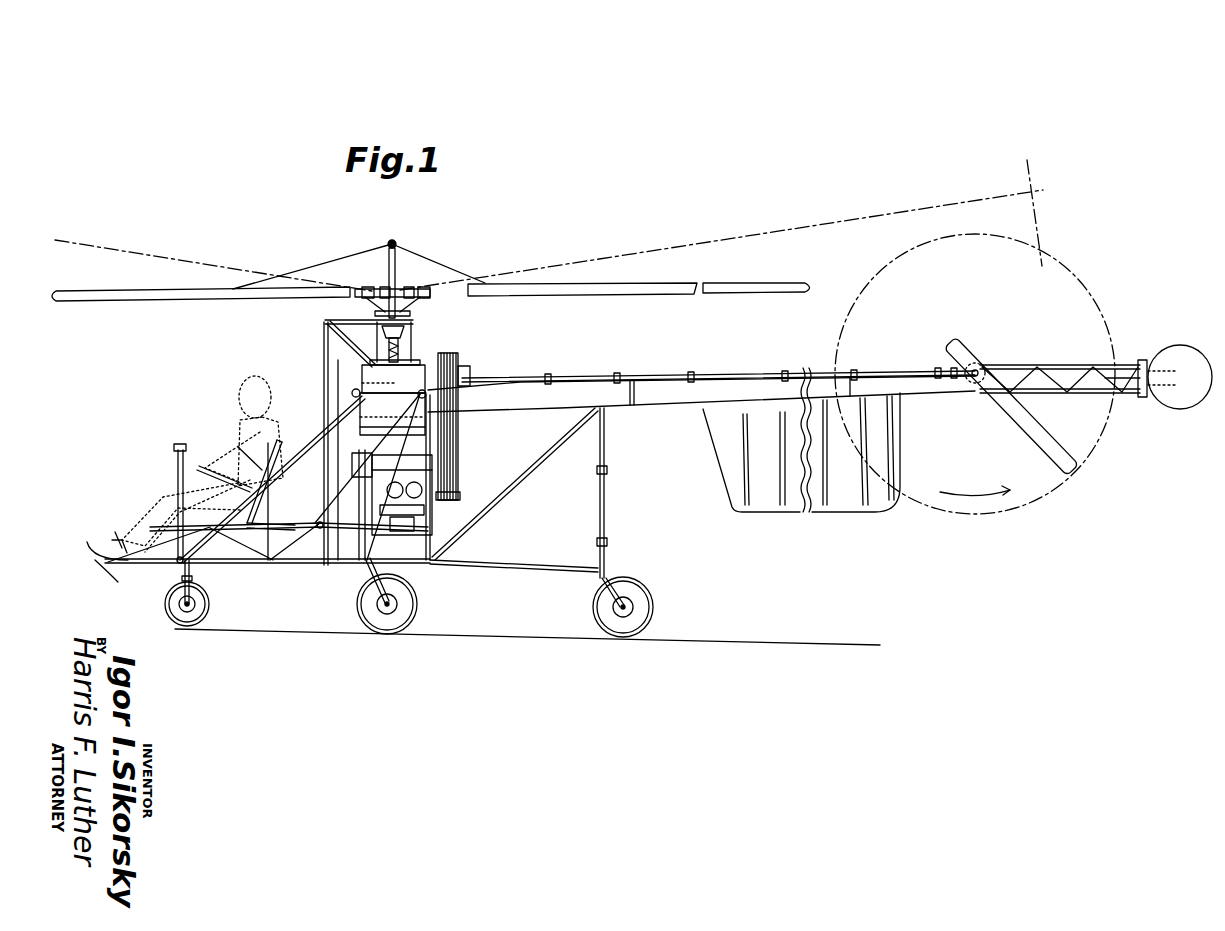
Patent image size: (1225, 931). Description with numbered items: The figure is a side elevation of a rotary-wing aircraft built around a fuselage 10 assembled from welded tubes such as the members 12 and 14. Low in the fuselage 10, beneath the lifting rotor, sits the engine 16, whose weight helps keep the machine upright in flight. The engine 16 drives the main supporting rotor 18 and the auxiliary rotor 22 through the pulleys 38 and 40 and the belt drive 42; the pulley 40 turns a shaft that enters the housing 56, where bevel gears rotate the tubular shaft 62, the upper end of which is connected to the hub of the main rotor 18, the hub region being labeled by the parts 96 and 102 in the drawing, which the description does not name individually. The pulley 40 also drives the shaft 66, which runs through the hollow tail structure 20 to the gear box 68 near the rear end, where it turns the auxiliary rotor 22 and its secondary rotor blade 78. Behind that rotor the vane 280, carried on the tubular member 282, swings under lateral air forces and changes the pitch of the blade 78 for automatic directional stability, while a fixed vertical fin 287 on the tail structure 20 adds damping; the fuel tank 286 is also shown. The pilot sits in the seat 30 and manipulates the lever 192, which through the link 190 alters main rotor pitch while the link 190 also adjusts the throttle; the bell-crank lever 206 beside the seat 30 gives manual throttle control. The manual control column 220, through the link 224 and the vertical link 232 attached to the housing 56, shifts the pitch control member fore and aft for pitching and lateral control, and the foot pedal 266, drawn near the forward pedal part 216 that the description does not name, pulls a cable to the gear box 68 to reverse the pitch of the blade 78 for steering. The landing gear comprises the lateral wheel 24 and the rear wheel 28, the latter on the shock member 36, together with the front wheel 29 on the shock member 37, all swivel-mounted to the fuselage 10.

The fuselage 10 is at (395, 570).
The welded tube 12 is at (299, 452).
The welded tube 14 is at (432, 440).
The engine 16 is at (400, 466).
The main supporting rotor 18 is at (505, 297).
The tail structure 20 is at (710, 372).
The auxiliary rotor 22 is at (962, 355).
The lateral wheel 24 is at (418, 608).
The rear wheel 28 is at (654, 604).
The front wheel 29 is at (210, 607).
The pilot seat 30 is at (292, 468).
The shock member 36 is at (606, 470).
The shock member 37 is at (180, 574).
The pulley 38 is at (470, 505).
The pulley 40 is at (462, 362).
The belt drive 42 is at (458, 452).
The housing 56 is at (355, 363).
The tubular shaft 62 is at (412, 305).
The shaft 66 is at (530, 376).
The gear box 68 is at (968, 385).
The secondary rotor blade 78 is at (1013, 428).
The rotor shaft housing 96 is at (404, 346).
The main rotor hub 102 is at (402, 292).
The link 190 is at (355, 392).
The manually operable lever 192 is at (198, 468).
The bell-crank lever 206 is at (238, 447).
The foot pedal 216 is at (110, 534).
The manual control column 220 is at (177, 478).
The link 224 is at (222, 548).
The vertical link 232 is at (322, 370).
The foot pedal 266 is at (110, 578).
The vane 280 is at (1176, 412).
The tubular member 282 is at (1070, 366).
The fuel tank 286 is at (432, 415).
The fixed vertical fin 287 is at (797, 514).